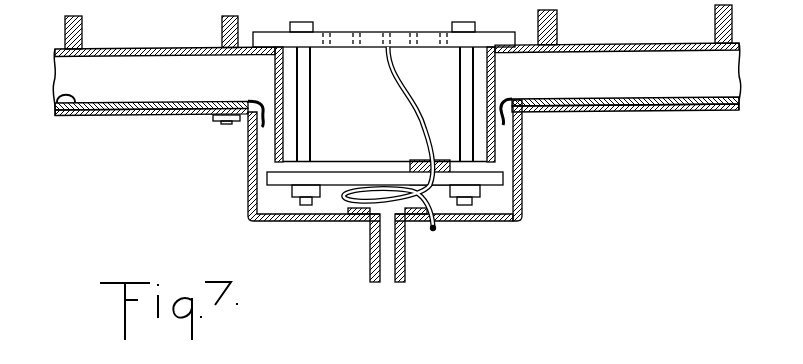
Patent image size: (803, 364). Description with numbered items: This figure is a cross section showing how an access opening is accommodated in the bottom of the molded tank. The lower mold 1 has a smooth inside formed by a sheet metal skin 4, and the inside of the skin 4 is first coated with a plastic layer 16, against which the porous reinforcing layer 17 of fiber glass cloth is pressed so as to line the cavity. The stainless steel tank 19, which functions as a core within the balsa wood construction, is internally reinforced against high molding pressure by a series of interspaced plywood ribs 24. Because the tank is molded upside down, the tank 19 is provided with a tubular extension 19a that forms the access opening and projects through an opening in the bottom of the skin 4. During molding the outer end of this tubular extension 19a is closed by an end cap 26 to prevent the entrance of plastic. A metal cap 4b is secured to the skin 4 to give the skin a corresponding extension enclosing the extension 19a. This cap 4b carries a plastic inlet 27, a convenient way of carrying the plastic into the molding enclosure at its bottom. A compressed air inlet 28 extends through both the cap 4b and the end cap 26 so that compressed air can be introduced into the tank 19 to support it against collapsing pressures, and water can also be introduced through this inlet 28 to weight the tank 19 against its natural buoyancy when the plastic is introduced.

The lower mold 1 is at (94, 133).
The sheet metal skin 4 is at (133, 117).
The metal cap 4b is at (248, 178).
The plastic layer 16 is at (55, 106).
The porous reinforcing layer 17 is at (199, 116).
The stainless steel tank lining 19 is at (690, 44).
The tubular extension 19a is at (517, 136).
The plywood ribs 24 is at (222, 28).
The end cap 26 is at (293, 177).
The plastic inlet 27 is at (372, 252).
The compressed air inlet 28 is at (403, 108).